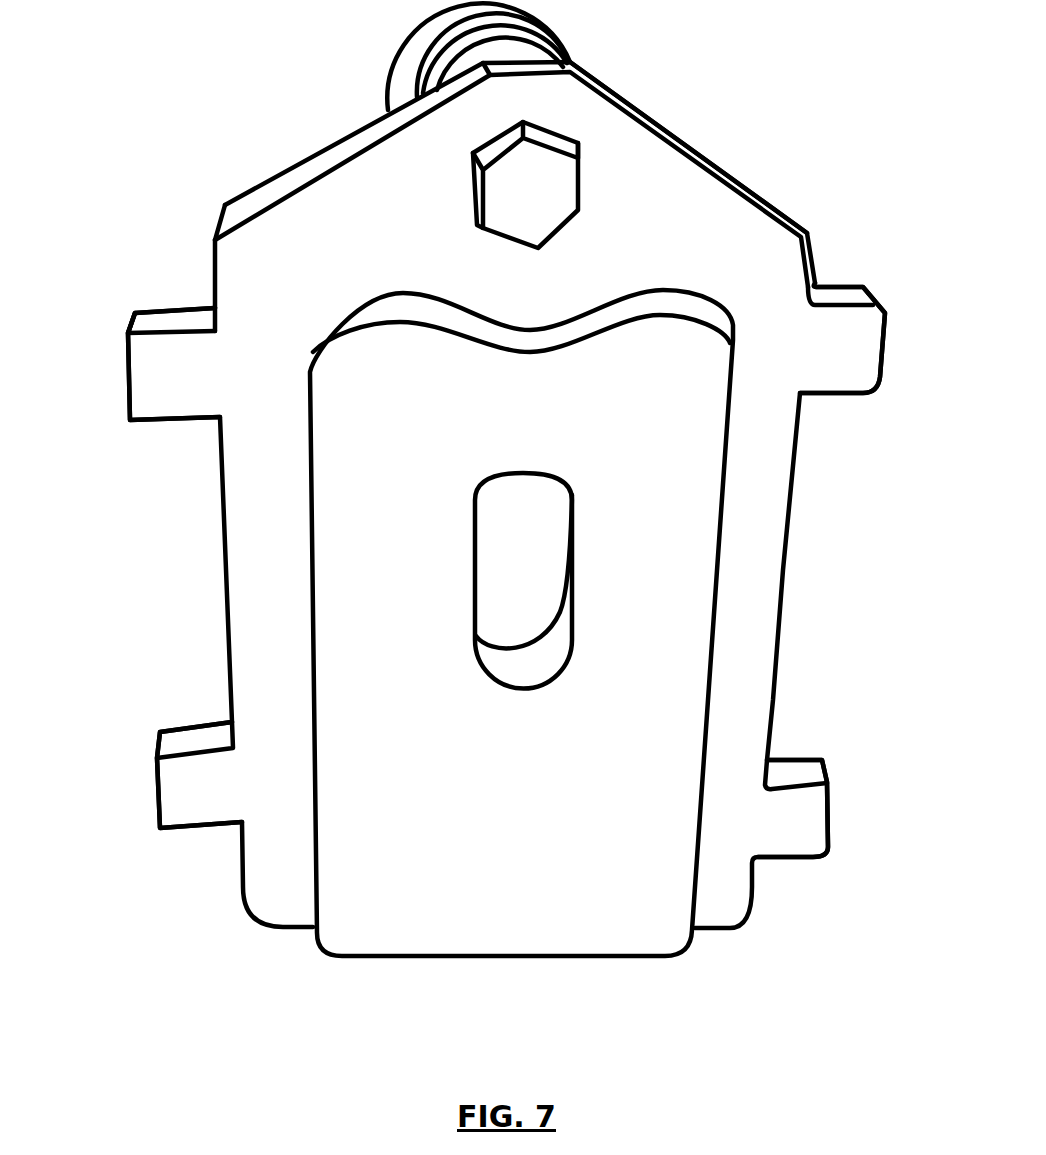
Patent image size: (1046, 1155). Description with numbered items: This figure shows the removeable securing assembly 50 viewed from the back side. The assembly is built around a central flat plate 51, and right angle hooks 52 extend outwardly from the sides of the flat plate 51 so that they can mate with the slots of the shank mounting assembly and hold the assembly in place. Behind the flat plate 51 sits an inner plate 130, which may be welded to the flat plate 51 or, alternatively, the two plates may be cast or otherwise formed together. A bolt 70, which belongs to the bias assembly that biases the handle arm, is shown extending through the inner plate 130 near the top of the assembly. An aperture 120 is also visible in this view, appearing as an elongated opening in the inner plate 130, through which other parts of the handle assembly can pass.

The removeable securing assembly 50 is at (720, 165).
The central flat plate 51 is at (750, 260).
The right angle hooks 52 is at (127, 376).
The bolt 70 is at (520, 198).
The inner plate 130 is at (700, 476).
The aperture 120 is at (532, 584).